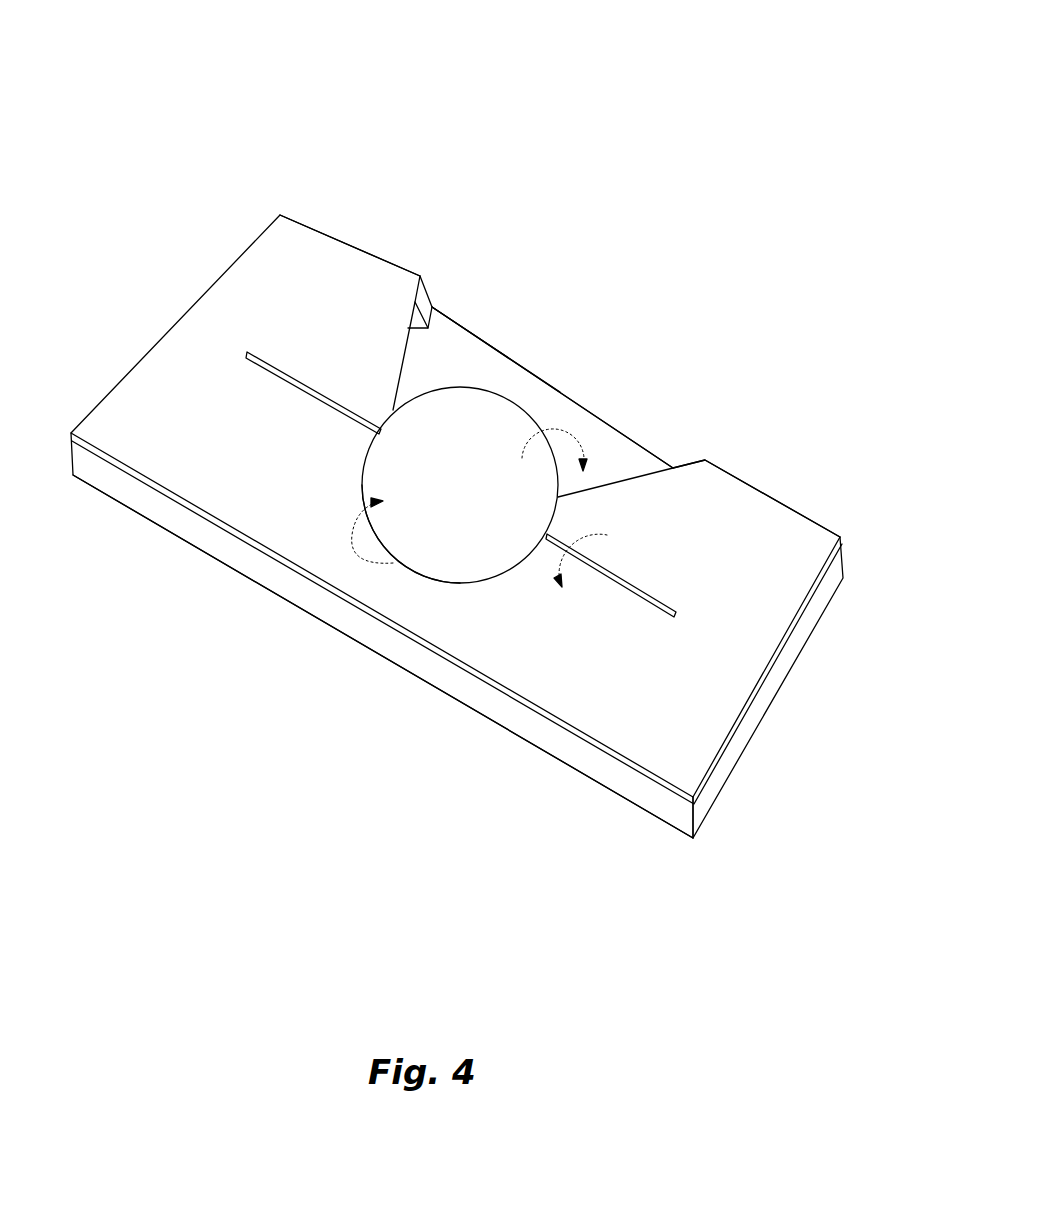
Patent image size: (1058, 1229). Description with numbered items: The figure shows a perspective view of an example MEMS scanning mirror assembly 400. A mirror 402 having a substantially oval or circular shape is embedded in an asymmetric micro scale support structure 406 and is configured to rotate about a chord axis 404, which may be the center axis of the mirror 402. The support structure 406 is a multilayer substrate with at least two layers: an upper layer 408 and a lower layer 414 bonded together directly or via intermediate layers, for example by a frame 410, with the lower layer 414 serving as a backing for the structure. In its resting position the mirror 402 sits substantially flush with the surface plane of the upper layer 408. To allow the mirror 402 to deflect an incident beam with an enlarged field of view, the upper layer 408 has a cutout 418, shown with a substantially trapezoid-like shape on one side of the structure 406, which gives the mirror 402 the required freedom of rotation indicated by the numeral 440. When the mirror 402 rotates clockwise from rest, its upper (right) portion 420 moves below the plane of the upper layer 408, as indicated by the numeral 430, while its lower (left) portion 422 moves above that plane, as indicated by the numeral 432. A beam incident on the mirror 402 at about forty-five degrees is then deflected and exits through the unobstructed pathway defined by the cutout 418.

The scanning mirror assembly 400 is at (653, 70).
The mirror 402 is at (465, 415).
The chord axis 404 is at (280, 367).
The asymmetric micro scale support structure 406 is at (143, 352).
The upper layer 408 is at (337, 272).
The frame 410 is at (402, 652).
The lower layer 414 is at (605, 423).
The cutout 418 is at (452, 367).
The upper portion of the mirror 420 is at (460, 472).
The lower portion of the mirror 422 is at (418, 550).
The downward movement indication 430 is at (567, 433).
The upward movement indication 432 is at (352, 542).
The freedom of rotation indication 440 is at (603, 542).